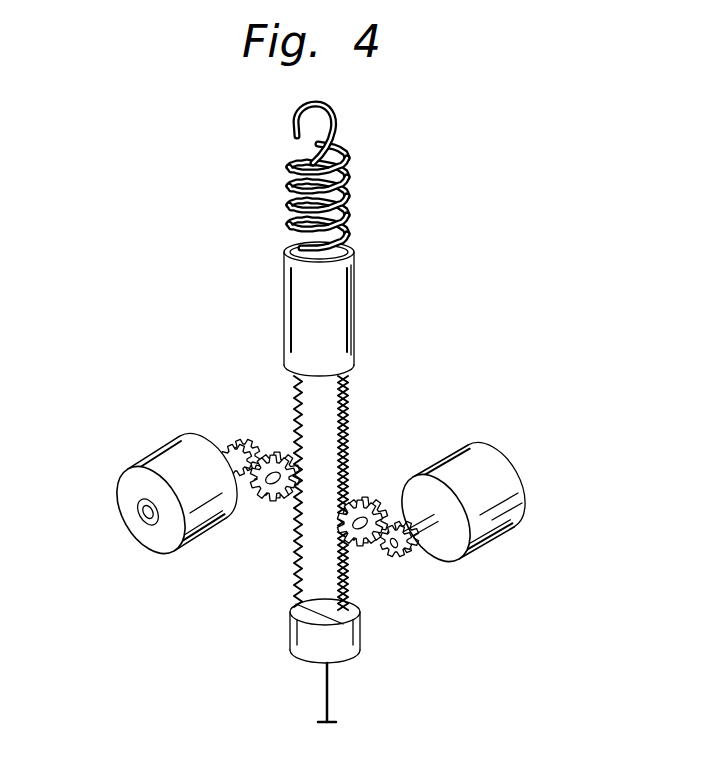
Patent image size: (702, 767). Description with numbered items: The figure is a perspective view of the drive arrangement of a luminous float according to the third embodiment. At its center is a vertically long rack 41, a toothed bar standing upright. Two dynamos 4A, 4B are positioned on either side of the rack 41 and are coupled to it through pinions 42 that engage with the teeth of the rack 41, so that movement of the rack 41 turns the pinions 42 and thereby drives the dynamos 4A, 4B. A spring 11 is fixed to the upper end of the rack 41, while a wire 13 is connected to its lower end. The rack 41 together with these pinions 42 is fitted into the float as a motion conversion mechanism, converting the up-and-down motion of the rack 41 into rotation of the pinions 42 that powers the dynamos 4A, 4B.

The spring 11 is at (348, 184).
The rack 41 is at (352, 400).
The pinions 42 is at (368, 492).
The dynamo 4A is at (513, 480).
The dynamo 4B is at (165, 443).
The wire 13 is at (332, 694).